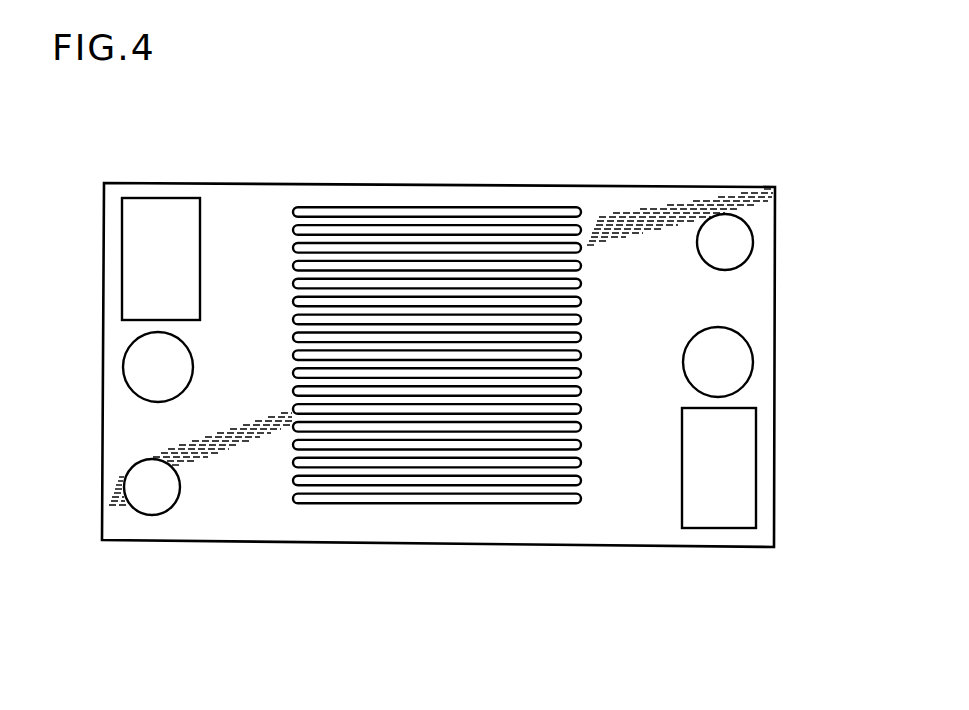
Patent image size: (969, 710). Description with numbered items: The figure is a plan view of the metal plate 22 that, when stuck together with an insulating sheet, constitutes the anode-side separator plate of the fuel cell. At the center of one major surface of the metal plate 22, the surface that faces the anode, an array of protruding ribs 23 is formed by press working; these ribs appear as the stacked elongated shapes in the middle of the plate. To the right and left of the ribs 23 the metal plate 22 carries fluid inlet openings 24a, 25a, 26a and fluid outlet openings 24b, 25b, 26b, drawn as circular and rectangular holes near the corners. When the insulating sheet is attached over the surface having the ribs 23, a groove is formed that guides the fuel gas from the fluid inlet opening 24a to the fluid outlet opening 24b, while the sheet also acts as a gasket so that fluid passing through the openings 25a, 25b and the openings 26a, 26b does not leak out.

The metal plate 22 is at (625, 205).
The protruding ribs 23 is at (458, 243).
The fluid inlet opening 24a is at (740, 247).
The fluid outlet opening 24b is at (126, 492).
The fluid inlet opening 25a is at (735, 367).
The fluid outlet opening 25b is at (144, 366).
The fluid inlet opening 26a is at (728, 483).
The fluid outlet opening 26b is at (144, 251).